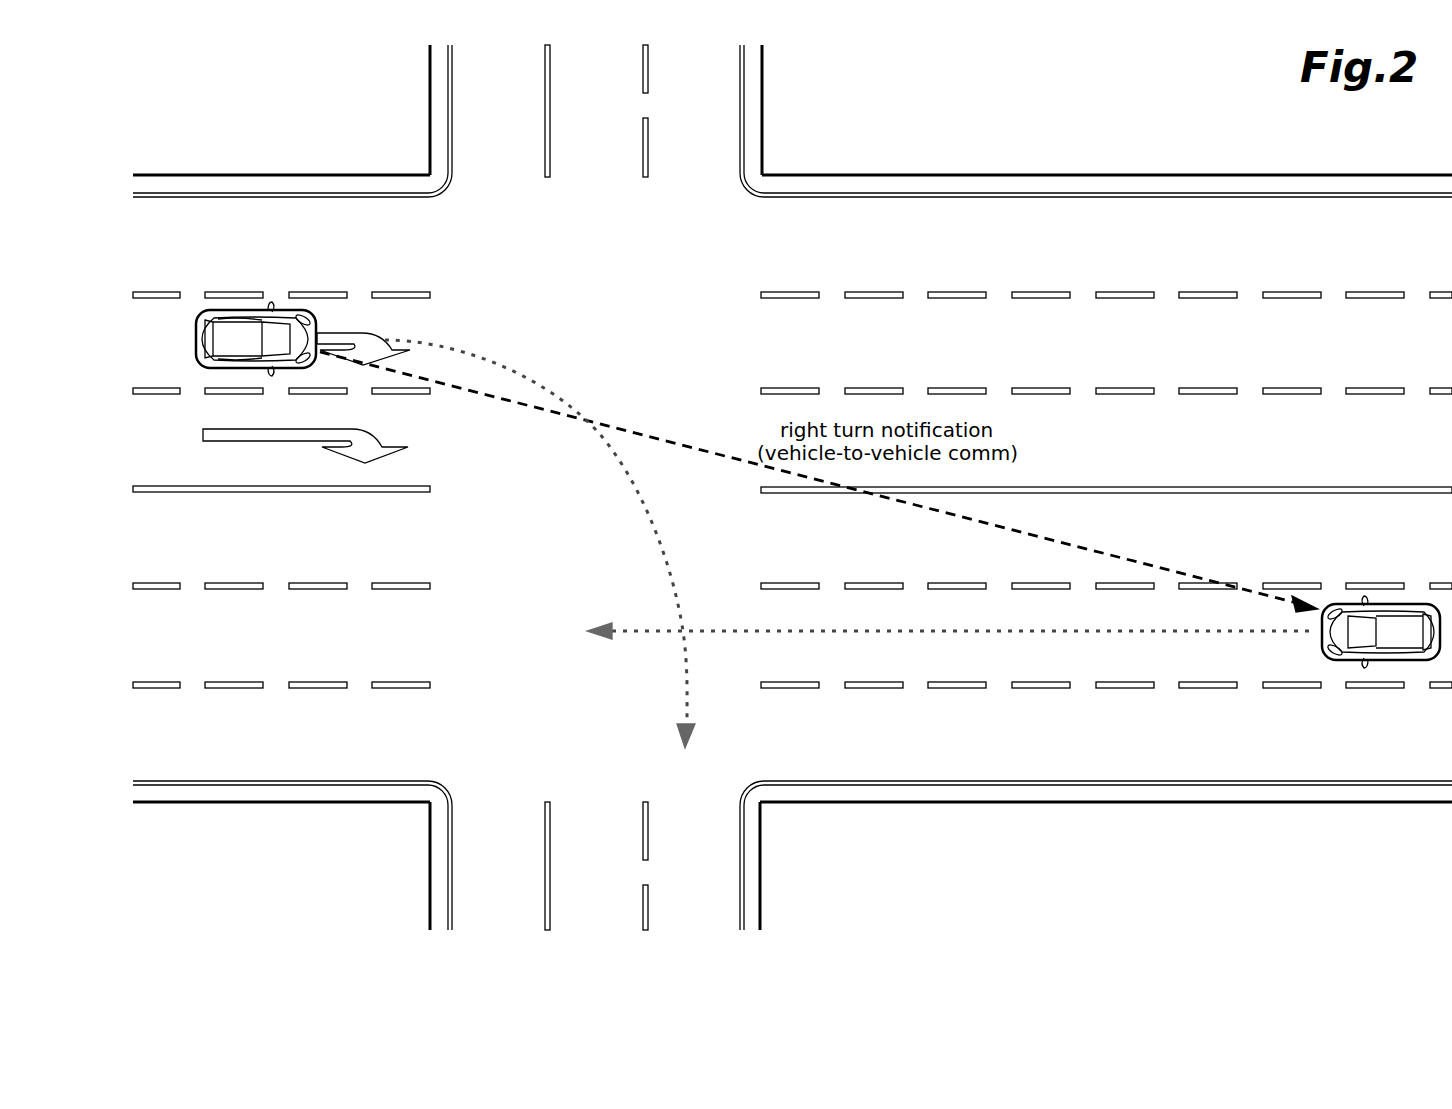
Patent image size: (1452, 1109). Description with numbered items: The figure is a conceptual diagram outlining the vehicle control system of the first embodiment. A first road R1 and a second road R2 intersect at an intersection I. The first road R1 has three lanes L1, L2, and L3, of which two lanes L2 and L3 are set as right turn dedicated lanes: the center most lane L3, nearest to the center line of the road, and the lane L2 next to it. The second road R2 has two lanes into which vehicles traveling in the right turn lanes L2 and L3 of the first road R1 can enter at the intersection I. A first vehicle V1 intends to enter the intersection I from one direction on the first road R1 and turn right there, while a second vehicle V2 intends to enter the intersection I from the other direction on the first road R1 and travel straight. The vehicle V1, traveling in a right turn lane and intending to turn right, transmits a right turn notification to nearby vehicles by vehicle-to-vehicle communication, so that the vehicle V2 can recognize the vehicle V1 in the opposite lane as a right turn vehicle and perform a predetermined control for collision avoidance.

The first road R1 is at (264, 175).
The second road R2 is at (430, 102).
The intersection I is at (668, 276).
The lane L1 is at (132, 263).
The lane L2 is at (132, 361).
The lane L3 is at (132, 453).
The vehicle V1 is at (250, 312).
The vehicle V2 is at (1388, 604).